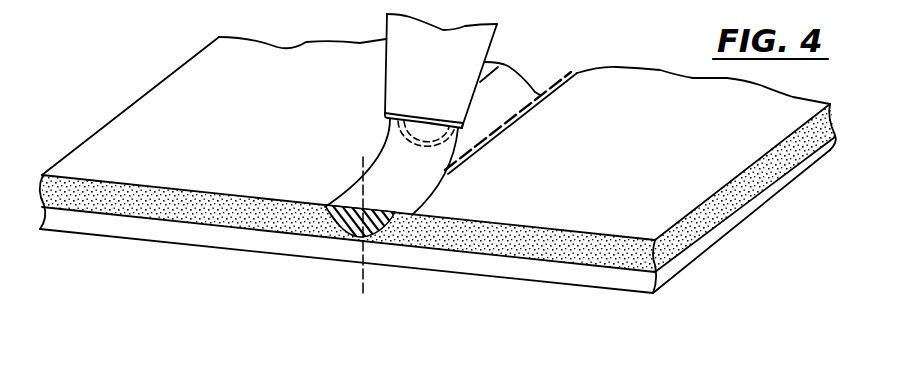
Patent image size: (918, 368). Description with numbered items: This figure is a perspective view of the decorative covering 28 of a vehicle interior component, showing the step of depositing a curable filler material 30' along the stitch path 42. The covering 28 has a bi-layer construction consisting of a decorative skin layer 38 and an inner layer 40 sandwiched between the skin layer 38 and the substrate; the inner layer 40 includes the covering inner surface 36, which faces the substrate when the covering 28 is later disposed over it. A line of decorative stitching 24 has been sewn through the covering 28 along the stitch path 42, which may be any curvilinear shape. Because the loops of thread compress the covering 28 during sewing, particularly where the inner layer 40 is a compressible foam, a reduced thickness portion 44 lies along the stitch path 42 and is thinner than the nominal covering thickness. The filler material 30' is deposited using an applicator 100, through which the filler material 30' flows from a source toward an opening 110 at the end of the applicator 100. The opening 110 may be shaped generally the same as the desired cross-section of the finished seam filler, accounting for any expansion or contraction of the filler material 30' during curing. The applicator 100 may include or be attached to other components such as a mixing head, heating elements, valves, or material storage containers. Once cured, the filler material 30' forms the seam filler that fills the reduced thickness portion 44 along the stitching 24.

The line of decorative stitching 24 is at (537, 94).
The decorative covering 28 is at (94, 134).
The curable filler material 30' is at (416, 167).
The inner surface 36 is at (649, 180).
The decorative skin layer 38 is at (647, 287).
The inner layer 40 is at (640, 257).
The stitch path 42 is at (358, 158).
The reduced thickness portion 44 is at (333, 232).
The applicator 100 is at (473, 52).
The opening 110 is at (428, 113).